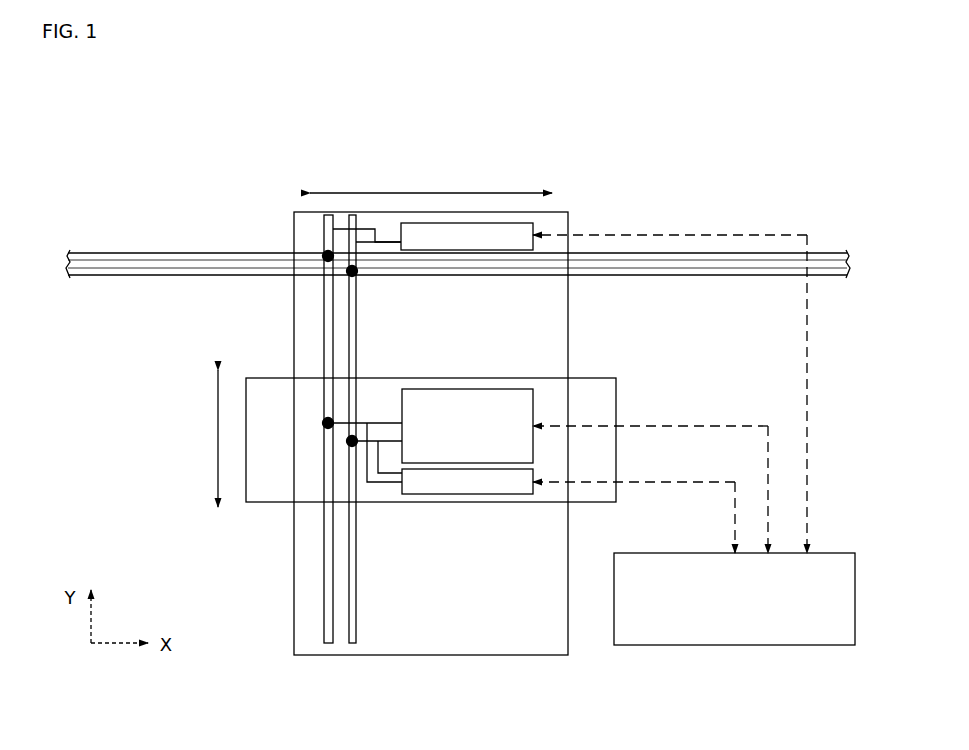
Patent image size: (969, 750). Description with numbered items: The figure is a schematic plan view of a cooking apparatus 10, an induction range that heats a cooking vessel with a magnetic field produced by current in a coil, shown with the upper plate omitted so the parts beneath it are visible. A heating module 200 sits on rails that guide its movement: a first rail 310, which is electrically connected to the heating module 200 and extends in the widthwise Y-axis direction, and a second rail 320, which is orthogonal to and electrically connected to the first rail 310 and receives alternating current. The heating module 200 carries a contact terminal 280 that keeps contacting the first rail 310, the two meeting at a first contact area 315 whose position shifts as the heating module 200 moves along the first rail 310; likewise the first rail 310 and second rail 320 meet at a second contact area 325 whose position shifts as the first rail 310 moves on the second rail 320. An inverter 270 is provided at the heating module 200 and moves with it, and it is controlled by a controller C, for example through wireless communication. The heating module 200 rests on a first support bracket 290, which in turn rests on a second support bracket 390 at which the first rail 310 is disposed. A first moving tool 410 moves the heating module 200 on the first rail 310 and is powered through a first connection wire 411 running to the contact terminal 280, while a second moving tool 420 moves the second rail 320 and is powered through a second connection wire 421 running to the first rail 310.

The cooking apparatus 10 is at (178, 182).
The first rail 310 is at (320, 598).
The second rail 320 is at (247, 248).
The second contact area 325 is at (327, 212).
The second connection wire 421 is at (398, 212).
The second moving tool 420 is at (465, 212).
The second support bracket 390 is at (568, 212).
The heating module 200 is at (622, 410).
The inverter 270 is at (512, 389).
The first support bracket 290 is at (616, 455).
The first contact area 315 is at (346, 444).
The contact terminal 280 is at (388, 420).
The first connection wire 411 is at (377, 460).
The first moving tool 410 is at (528, 494).
The controller C is at (750, 645).